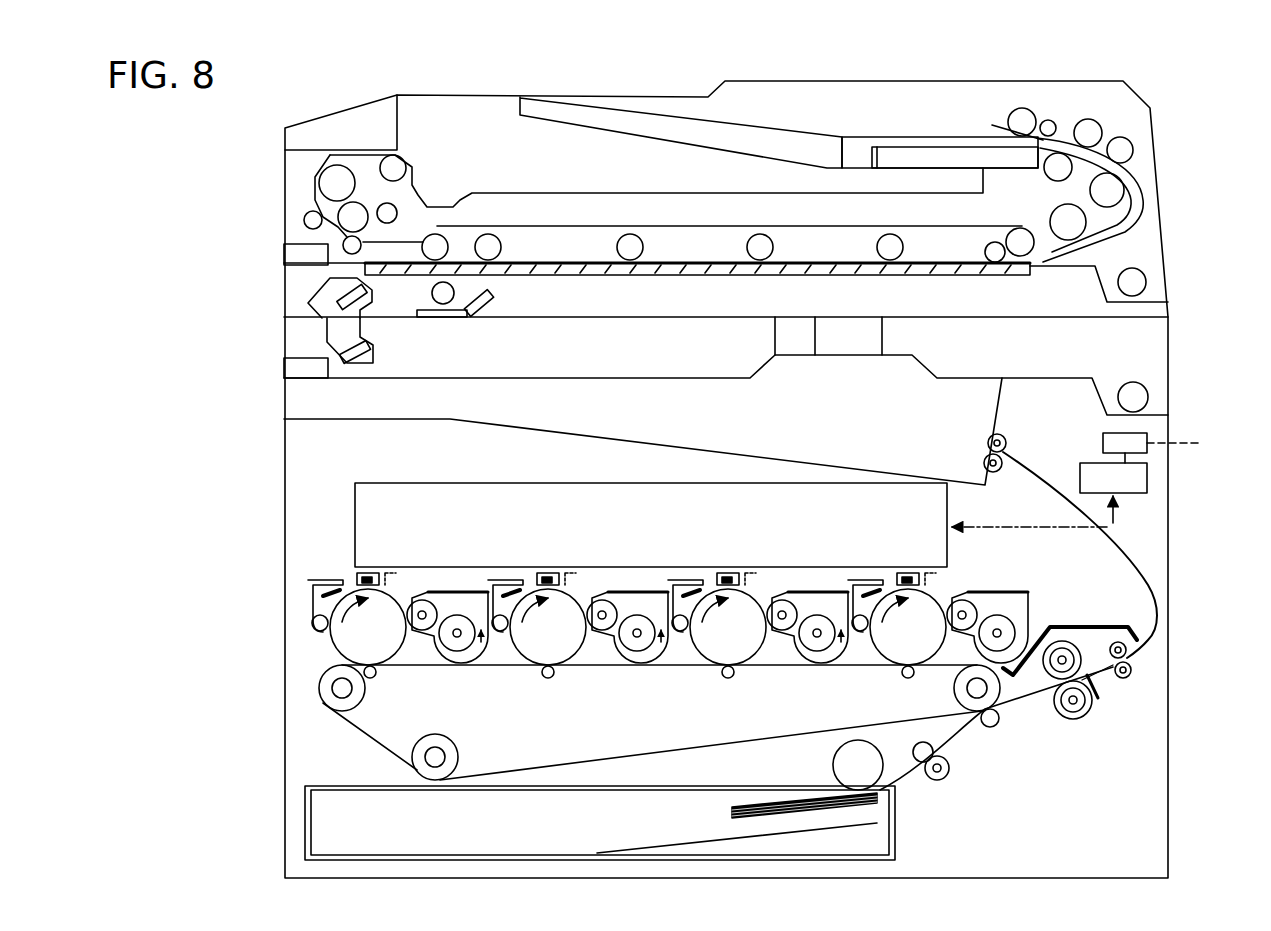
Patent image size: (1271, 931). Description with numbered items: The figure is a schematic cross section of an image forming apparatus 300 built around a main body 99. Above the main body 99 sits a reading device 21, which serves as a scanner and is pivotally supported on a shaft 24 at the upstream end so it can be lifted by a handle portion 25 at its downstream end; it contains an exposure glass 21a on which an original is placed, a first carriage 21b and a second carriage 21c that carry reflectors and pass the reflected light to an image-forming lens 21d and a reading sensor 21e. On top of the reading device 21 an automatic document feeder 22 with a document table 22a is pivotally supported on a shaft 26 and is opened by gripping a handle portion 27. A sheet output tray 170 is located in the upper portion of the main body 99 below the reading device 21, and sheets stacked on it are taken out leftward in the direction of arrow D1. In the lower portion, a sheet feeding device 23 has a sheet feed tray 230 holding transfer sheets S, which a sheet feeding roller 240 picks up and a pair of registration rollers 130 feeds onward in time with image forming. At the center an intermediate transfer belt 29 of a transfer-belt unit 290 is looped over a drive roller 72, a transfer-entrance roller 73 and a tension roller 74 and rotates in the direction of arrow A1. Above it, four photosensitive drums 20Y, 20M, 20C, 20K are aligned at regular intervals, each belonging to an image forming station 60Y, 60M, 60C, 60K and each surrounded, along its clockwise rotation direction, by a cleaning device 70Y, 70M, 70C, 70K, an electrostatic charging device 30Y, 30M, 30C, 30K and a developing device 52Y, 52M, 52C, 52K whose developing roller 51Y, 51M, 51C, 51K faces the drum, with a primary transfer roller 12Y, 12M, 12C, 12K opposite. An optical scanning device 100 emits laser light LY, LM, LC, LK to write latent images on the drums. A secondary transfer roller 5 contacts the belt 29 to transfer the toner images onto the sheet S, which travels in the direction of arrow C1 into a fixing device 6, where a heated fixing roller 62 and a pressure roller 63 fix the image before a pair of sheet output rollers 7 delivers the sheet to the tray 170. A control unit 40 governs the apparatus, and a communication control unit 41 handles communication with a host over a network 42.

The image forming apparatus 300 is at (1203, 103).
The automatic document feeder (ADF) 22 is at (252, 203).
The document table 22a is at (674, 114).
The handle portion 27 is at (284, 256).
The shaft 26 is at (1132, 275).
The reading device 21 is at (252, 340).
The exposure glass 21a is at (667, 275).
The first carriage 21b is at (505, 292).
The second carriage 21c is at (395, 335).
The image-forming lens 21d is at (775, 340).
The reading sensor 21e is at (882, 340).
The handle portion 25 is at (284, 368).
The shaft 24 is at (1133, 390).
The direction D1 is at (360, 399).
The optical scanning device 100 is at (356, 463).
The sheet output tray 170 is at (855, 472).
The pair of sheet output rollers 7 is at (1012, 438).
The communication control unit 41 is at (1103, 440).
The control unit 40 is at (1082, 474).
The network 42 is at (1176, 452).
The main body 99 is at (1152, 552).
The photosensitive drum 20K is at (386, 653).
The photosensitive drum 20C is at (566, 653).
The photosensitive drum 20M is at (747, 653).
The photosensitive drum 20Y is at (926, 653).
The electrostatic charging device 30K is at (366, 571).
The electrostatic charging device 30C is at (546, 571).
The electrostatic charging device 30M is at (726, 571).
The electrostatic charging device 30Y is at (906, 571).
The cleaning device 70K is at (313, 576).
The cleaning device 70C is at (493, 576).
The cleaning device 70M is at (673, 576).
The cleaning device 70Y is at (853, 576).
The developing roller 51K is at (428, 600).
The developing roller 51C is at (608, 600).
The developing roller 51M is at (788, 600).
The developing roller 51Y is at (968, 600).
The image forming station 60K is at (405, 692).
The image forming station 60C is at (585, 676).
The image forming station 60M is at (700, 695).
The image forming station 60Y is at (992, 580).
The developing device 52K is at (478, 652).
The developing device 52C is at (658, 652).
The developing device 52M is at (838, 652).
The developing device 52Y is at (1018, 607).
The primary transfer roller 12K is at (377, 673).
The primary transfer roller 12C is at (549, 679).
The primary transfer roller 12M is at (729, 679).
The primary transfer roller 12Y is at (905, 680).
The laser light LK is at (403, 582).
The laser light LC is at (583, 582).
The laser light LM is at (764, 582).
The laser light LY is at (941, 582).
The intermediate transfer belt 29 is at (672, 750).
The transfer-belt unit 290 is at (360, 750).
The drive roller 72 is at (358, 700).
The tension roller 74 is at (458, 752).
The transfer-entrance roller 73 is at (955, 693).
The direction A1 is at (822, 720).
The secondary transfer roller 5 is at (991, 732).
The pair of registration rollers 130 is at (948, 786).
The sheet feeding roller 240 is at (836, 768).
The sheet feed tray 230 is at (771, 785).
The fixing roller 62 is at (1061, 648).
The pressure roller 63 is at (1090, 708).
The fixing device 6 is at (1065, 726).
The direction C1 is at (1043, 698).
The sheet feeding device 23 is at (255, 825).
The transfer sheet S is at (733, 808).